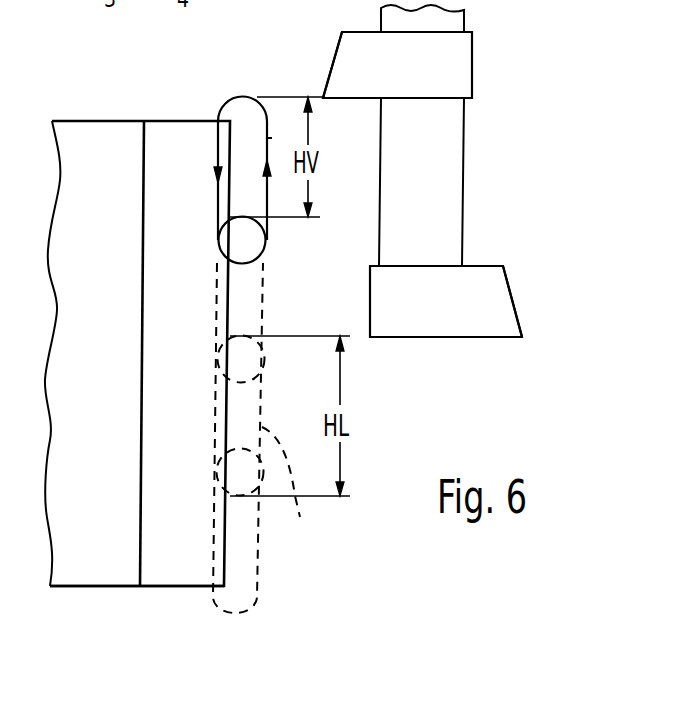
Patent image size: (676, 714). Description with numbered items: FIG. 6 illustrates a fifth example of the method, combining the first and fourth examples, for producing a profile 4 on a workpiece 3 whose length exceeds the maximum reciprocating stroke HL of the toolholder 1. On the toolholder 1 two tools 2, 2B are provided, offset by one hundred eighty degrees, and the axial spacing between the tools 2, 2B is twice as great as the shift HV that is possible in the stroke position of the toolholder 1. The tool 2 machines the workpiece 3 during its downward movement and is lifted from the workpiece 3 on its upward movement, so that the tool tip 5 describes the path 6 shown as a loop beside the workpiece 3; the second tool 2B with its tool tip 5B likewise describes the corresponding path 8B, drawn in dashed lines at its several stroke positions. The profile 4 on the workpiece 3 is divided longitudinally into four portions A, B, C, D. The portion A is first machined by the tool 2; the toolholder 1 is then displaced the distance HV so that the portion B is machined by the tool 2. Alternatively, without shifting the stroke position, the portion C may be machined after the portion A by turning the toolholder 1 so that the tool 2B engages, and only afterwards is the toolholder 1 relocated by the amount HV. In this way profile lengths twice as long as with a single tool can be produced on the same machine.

The toolholder 1 is at (453, 22).
The tool 2 is at (453, 62).
The second tool 2B is at (482, 277).
The workpiece 3 is at (80, 563).
The profile 4 is at (182, 570).
The tool tip 5 is at (323, 98).
The tool tip of second tool 5B is at (522, 340).
The path 6 is at (272, 138).
The path of second tool tip 8B is at (289, 489).